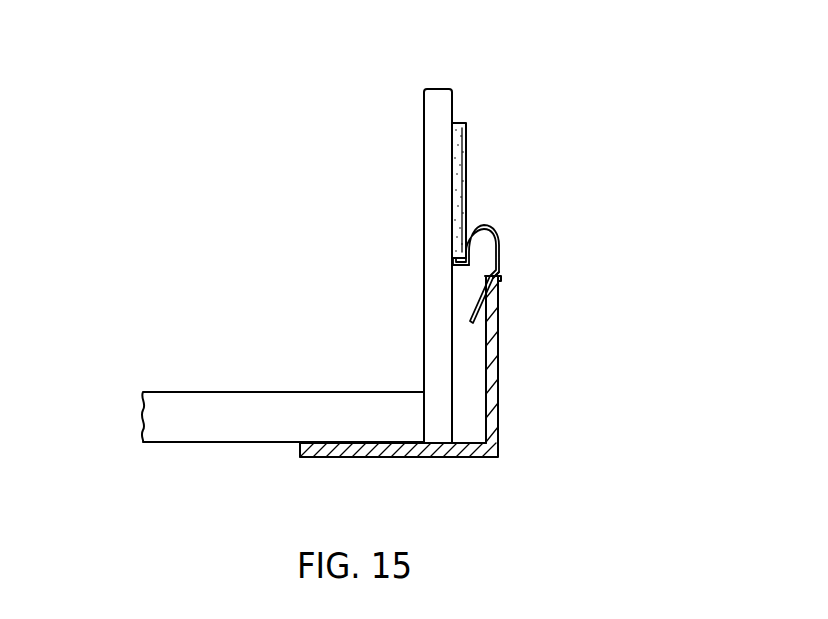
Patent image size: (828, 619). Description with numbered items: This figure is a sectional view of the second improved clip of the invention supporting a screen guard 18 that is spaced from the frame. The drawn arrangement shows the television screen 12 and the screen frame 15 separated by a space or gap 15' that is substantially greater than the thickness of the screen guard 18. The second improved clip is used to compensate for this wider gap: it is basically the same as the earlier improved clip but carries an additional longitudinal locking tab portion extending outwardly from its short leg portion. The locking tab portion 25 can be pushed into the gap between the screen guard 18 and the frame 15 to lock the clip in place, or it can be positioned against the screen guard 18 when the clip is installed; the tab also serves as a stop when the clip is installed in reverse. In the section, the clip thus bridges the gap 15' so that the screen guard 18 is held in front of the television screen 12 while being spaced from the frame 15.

The television screen 12 is at (452, 104).
The screen guard 18 is at (466, 153).
The locking tab portion 25 is at (458, 268).
The screen frame 15 is at (450, 366).
The space or gap 15' is at (524, 419).